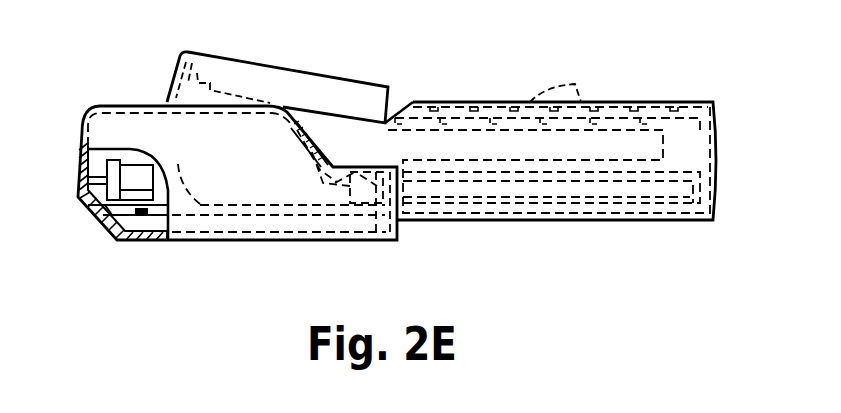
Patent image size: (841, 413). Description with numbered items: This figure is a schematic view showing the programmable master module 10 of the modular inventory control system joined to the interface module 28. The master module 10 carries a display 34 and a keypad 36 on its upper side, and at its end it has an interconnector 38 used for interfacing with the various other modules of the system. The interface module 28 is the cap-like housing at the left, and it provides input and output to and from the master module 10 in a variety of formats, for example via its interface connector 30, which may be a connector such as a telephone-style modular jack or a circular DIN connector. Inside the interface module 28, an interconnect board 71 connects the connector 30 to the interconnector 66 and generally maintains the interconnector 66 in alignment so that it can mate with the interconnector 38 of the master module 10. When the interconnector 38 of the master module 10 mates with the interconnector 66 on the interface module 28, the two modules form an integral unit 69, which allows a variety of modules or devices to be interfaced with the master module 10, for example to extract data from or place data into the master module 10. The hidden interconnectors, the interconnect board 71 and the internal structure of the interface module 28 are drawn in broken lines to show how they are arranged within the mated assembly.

The master module 10 is at (714, 106).
The interface module 28 is at (98, 104).
The interface connector 30 is at (88, 175).
The display 34 is at (388, 87).
The keypad 36 is at (582, 85).
The interconnector 38 is at (307, 173).
The interconnector 66 is at (347, 181).
The integral unit 69 is at (475, 92).
The interconnect board 71 is at (190, 171).